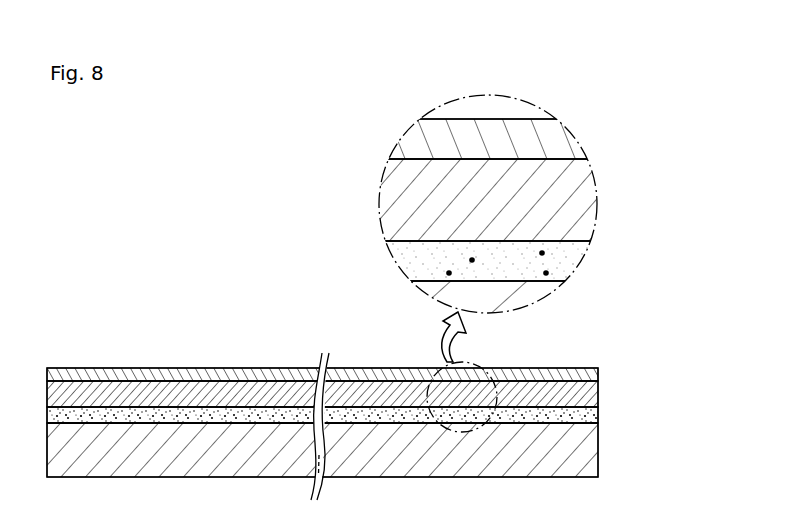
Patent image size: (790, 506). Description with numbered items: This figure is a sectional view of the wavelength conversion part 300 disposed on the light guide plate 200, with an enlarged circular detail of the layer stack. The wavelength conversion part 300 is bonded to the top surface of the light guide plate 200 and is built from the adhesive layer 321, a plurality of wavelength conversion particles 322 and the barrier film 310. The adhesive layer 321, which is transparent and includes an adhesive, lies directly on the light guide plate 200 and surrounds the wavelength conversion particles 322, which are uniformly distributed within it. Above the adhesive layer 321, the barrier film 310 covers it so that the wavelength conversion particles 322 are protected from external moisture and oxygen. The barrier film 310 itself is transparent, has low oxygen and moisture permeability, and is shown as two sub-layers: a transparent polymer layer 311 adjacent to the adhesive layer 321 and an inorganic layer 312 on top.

The light guide plate 200 is at (598, 448).
The wavelength conversion part 300 is at (374, 279).
The barrier film 310 is at (368, 263).
The transparent polymer layer 311 is at (218, 392).
The inorganic layer 312 is at (150, 375).
The adhesive layer 321 is at (347, 335).
The wavelength conversion particles 322 is at (549, 273).